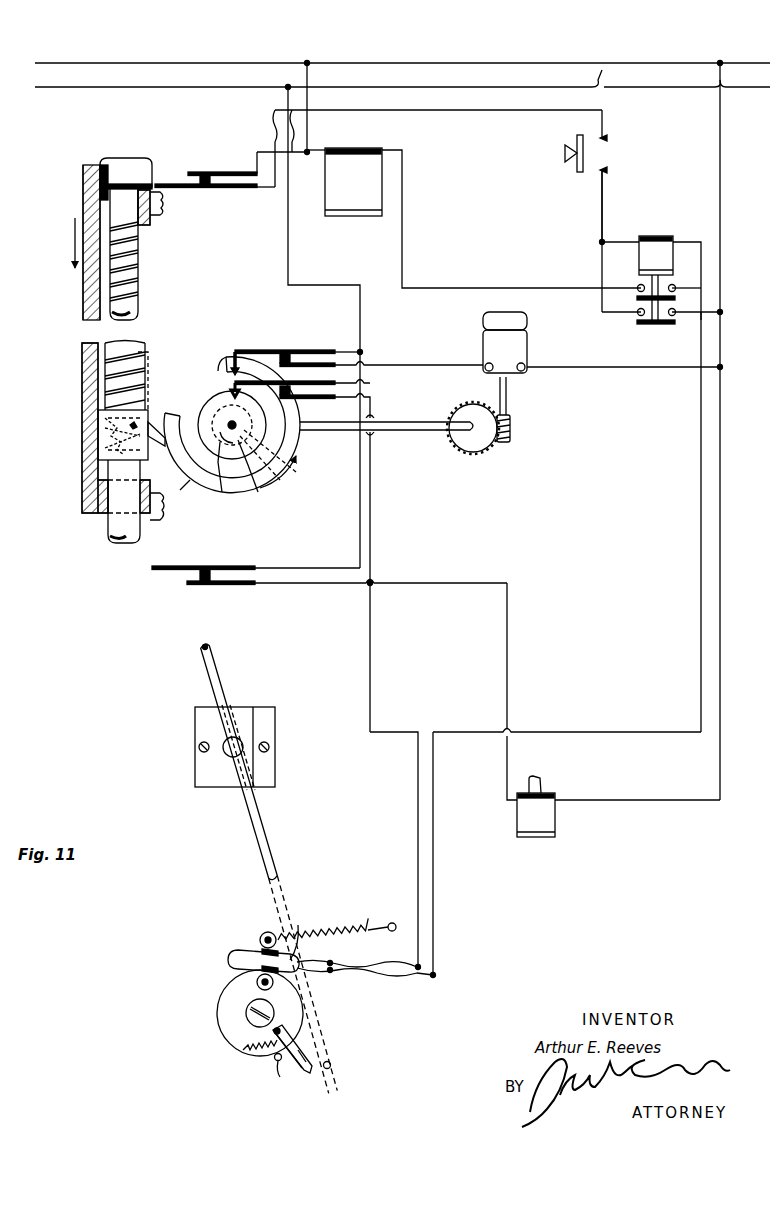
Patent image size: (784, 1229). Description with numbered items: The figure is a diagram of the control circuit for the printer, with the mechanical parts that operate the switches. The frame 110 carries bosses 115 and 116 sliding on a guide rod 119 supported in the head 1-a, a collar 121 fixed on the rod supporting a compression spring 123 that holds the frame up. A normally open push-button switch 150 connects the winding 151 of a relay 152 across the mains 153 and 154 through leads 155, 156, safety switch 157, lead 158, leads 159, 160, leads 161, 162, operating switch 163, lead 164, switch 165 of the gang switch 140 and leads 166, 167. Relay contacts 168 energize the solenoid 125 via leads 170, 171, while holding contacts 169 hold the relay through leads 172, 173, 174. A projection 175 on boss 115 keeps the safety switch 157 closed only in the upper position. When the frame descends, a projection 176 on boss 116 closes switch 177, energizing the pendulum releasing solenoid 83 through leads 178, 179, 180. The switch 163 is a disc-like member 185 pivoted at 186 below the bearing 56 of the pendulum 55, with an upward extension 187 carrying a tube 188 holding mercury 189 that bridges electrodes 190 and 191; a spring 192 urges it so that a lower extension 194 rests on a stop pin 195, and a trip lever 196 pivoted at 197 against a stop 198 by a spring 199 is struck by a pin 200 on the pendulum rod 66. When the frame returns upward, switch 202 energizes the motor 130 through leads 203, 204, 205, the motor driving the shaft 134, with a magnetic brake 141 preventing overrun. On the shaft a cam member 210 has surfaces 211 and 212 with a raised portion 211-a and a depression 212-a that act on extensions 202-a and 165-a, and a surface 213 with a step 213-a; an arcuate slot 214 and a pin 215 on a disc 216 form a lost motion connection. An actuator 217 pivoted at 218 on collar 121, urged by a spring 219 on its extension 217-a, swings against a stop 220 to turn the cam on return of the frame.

The head 1-a is at (128, 158).
The frame 110 is at (83, 185).
The upper boss 115 is at (158, 218).
The boss 116 is at (142, 500).
The guide rod 119 is at (138, 290).
The collar 121 is at (135, 418).
The compression spring 123 is at (138, 270).
The solenoid 125 is at (353, 182).
The electric motor 130 is at (487, 392).
The shaft 134 is at (400, 432).
The gang switch 140 is at (300, 462).
The magnetic brake 141 is at (509, 300).
The push-button operated switch 150 is at (612, 223).
The winding 151 is at (656, 255).
The relay 152 is at (652, 263).
The power main 153 is at (507, 63).
The power main 154 is at (402, 60).
The lead 155 is at (292, 100).
The lead 156 is at (275, 140).
The safety switch 157 is at (255, 192).
The lead 158 is at (490, 112).
The lead 159 is at (602, 195).
The lead 160 is at (612, 242).
The lead 161 is at (690, 242).
The lead 162 is at (701, 455).
The operating switch 163 is at (285, 992).
The lead 164 is at (370, 675).
The switch 165 is at (315, 400).
The operating extension 165-a is at (280, 383).
The lead 166 is at (358, 385).
The lead 167 is at (360, 322).
The contacts 168 is at (632, 277).
The holding contacts 169 is at (636, 322).
The lead 170 is at (307, 135).
The lead 171 is at (402, 205).
The lead 172 is at (720, 175).
The lead 173 is at (701, 316).
The lead 174 is at (602, 262).
The projection 175 is at (150, 212).
The projection 176 is at (163, 512).
The switch 177 is at (205, 585).
The lead 178 is at (720, 605).
The lead 179 is at (507, 647).
The lead 180 is at (360, 548).
The disc-like member 185 is at (218, 1030).
The pivot 186 is at (246, 1010).
The upward extension 187 is at (262, 934).
The closed tube 188 is at (228, 958).
The mercury 189 is at (295, 972).
The electrode 190 is at (335, 917).
The electrode 191 is at (292, 934).
The tension spring 192 is at (380, 932).
The lower extension 194 is at (305, 1048).
The stop pin 195 is at (280, 1077).
The trip lever 196 is at (318, 1078).
The pivot 197 is at (308, 1058).
The stop 198 is at (275, 1060).
The tension spring 199 is at (243, 1050).
The pin 200 is at (331, 1066).
The switch 202 is at (300, 350).
The operating extension 202-a is at (238, 386).
The lead 203 is at (612, 367).
The lead 204 is at (400, 365).
The lead 205 is at (358, 335).
The cam member 210 is at (208, 485).
The cam surface 211 is at (258, 492).
The raised cam surface 211-a is at (237, 368).
The cam surface 212 is at (222, 492).
The depressed cam surface 212-a is at (235, 352).
The cam surface 213 is at (300, 445).
The step 213-a is at (200, 340).
The arcuate slot 214 is at (184, 490).
The pin 215 is at (276, 471).
The disc 216 is at (299, 468).
The actuator 217 is at (160, 452).
The extension 217-a is at (102, 430).
The pivot 218 is at (102, 416).
The tension spring 219 is at (105, 448).
The stop 220 is at (148, 372).
The pendulum 55 is at (270, 815).
The antifriction bearing structure 56 is at (195, 757).
The pendulum rod 66 is at (277, 852).
The solenoid 83 is at (536, 806).